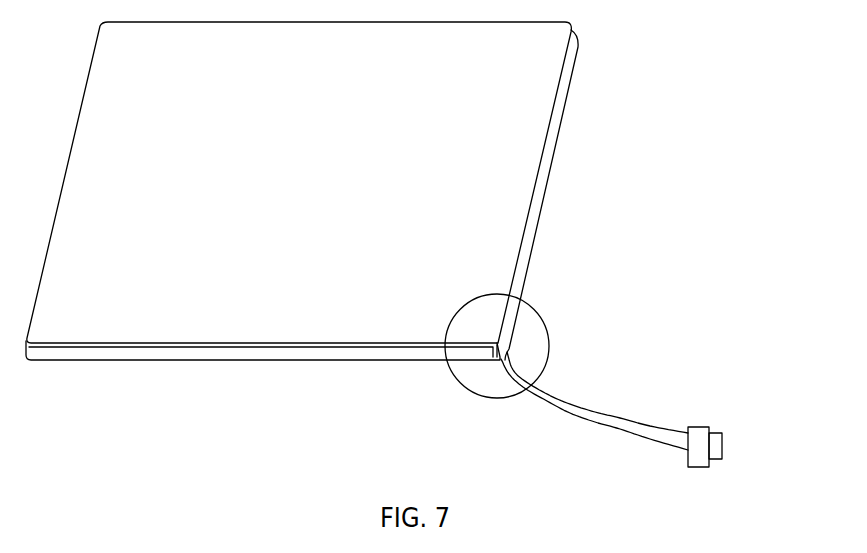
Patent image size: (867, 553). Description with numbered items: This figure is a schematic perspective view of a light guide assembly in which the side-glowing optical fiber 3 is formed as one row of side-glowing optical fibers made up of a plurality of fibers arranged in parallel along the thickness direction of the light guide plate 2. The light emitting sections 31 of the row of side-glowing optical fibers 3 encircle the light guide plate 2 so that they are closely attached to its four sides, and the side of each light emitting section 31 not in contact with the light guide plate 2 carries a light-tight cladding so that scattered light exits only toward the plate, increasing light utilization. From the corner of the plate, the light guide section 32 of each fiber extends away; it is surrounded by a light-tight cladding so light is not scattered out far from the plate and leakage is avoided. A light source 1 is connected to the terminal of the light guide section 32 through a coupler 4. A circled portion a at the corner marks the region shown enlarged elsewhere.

The light source 1 is at (715, 443).
The light guide plate 2 is at (549, 131).
The side-glowing optical fiber 3 is at (594, 240).
The light emitting section 31 is at (526, 273).
The light guide section 32 is at (565, 403).
The coupler 4 is at (695, 435).
The portion "a" a is at (457, 382).